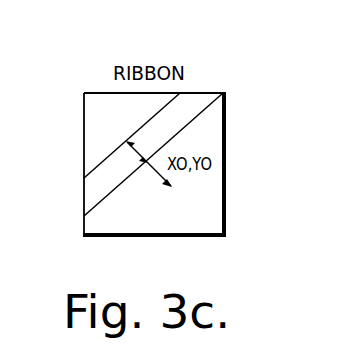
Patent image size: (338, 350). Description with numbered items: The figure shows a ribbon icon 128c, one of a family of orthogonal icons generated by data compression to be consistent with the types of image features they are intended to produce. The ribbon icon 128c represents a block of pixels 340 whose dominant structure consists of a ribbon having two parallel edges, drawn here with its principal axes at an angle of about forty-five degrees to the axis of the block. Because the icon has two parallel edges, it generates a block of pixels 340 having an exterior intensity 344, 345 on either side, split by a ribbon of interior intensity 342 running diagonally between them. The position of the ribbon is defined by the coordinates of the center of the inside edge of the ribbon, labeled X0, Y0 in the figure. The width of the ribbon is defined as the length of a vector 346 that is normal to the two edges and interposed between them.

The ribbon icon 128c is at (261, 62).
The exterior intensity 345 is at (90, 98).
The vector 346 is at (99, 171).
The interior intensity 342 is at (88, 231).
The block of pixels 340 is at (227, 172).
The exterior intensity 344 is at (192, 237).